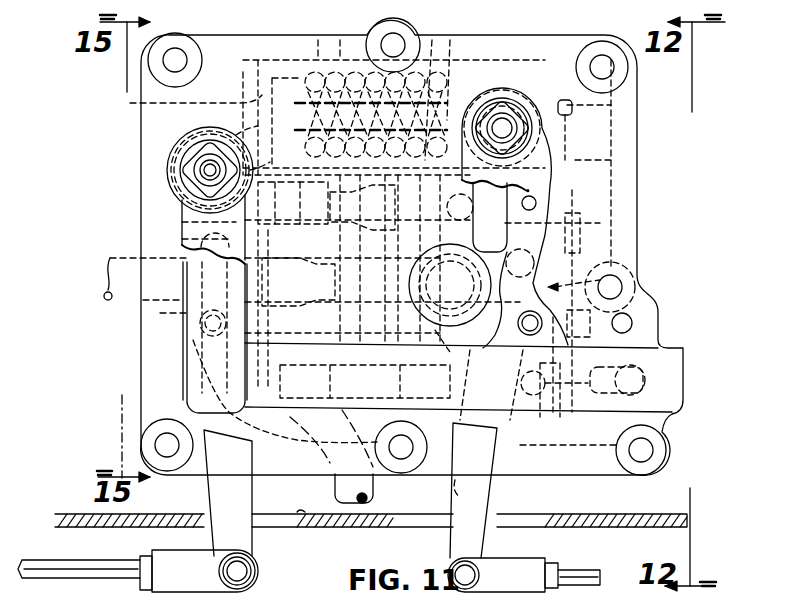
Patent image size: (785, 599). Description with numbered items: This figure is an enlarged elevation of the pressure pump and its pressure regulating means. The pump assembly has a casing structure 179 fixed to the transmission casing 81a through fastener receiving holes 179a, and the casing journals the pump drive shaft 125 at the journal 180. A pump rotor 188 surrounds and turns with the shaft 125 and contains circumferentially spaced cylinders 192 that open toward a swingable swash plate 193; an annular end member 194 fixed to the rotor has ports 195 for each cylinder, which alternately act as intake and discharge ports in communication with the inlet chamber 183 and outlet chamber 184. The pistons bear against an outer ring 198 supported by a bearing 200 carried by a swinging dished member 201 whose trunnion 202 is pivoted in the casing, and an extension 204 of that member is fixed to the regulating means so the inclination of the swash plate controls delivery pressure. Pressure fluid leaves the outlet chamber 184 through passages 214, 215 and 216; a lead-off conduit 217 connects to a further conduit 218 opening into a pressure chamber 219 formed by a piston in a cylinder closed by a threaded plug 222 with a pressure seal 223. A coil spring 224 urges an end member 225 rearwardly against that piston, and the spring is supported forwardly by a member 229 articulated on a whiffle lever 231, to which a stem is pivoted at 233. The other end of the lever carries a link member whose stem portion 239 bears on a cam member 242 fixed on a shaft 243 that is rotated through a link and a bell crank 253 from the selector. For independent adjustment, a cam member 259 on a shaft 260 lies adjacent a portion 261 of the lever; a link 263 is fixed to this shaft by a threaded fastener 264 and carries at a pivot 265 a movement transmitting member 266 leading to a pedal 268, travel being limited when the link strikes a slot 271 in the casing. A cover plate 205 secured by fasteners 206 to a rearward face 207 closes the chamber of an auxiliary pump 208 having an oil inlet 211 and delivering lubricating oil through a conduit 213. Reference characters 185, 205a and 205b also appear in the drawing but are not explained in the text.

The casing structure 179 is at (620, 181).
The fastener receiving holes 179a is at (176, 52).
The partially threaded shaft 260 is at (206, 168).
The cam member 259 is at (172, 128).
The portion of the lever 261 is at (130, 103).
The threaded fastener 264 is at (248, 146).
The pivotal connection 265 is at (252, 164).
The link 263 is at (253, 548).
The pedal 268 is at (251, 576).
The movement transmitting member 266 is at (41, 564).
The transmission casing 81a is at (688, 522).
The slot 271 is at (300, 532).
The cam member 242 is at (502, 125).
The partially threaded shaft 243 is at (519, 112).
The pressure chamber 219 is at (529, 108).
The bell crank 253 is at (486, 494).
The oil inlet 211 is at (455, 492).
The bracket 185 is at (340, 480).
The bearing 200 is at (404, 409).
The swinging dished member 201 is at (469, 411).
The pivot 233 is at (394, 107).
The whiffle lever 231 is at (243, 45).
The forward spring support member 229 is at (316, 42).
The coil spring 224 is at (341, 40).
The stem portion 239 is at (433, 40).
The end member 225 is at (450, 40).
The pressure seal 223 is at (575, 108).
The threaded plug 222 is at (582, 136).
The conduit 218 is at (554, 181).
The lead-off conduit 217 is at (552, 197).
The rearward face 207 is at (567, 214).
The fasteners 206 is at (583, 230).
The cover plate 205 is at (590, 256).
The auxiliary pump 208 is at (622, 272).
The conduit 213 is at (632, 323).
The passage 215 is at (646, 377).
The port 205a is at (582, 366).
The port 205b is at (548, 445).
The passage 216 is at (498, 432).
The inlet chamber 183 is at (182, 222).
The outlet chamber 184 is at (182, 239).
The pump drive shaft 125 is at (110, 258).
The journal 180 is at (160, 315).
The cylinders 192 is at (277, 222).
The outer ring 198 is at (362, 212).
The ports 195 is at (310, 274).
The annular end member 194 is at (281, 310).
The trunnion 202 is at (367, 260).
The pump rotor 188 is at (305, 332).
The extension 204 is at (357, 250).
The swash plate 193 is at (432, 193).
The passage 214 is at (323, 397).